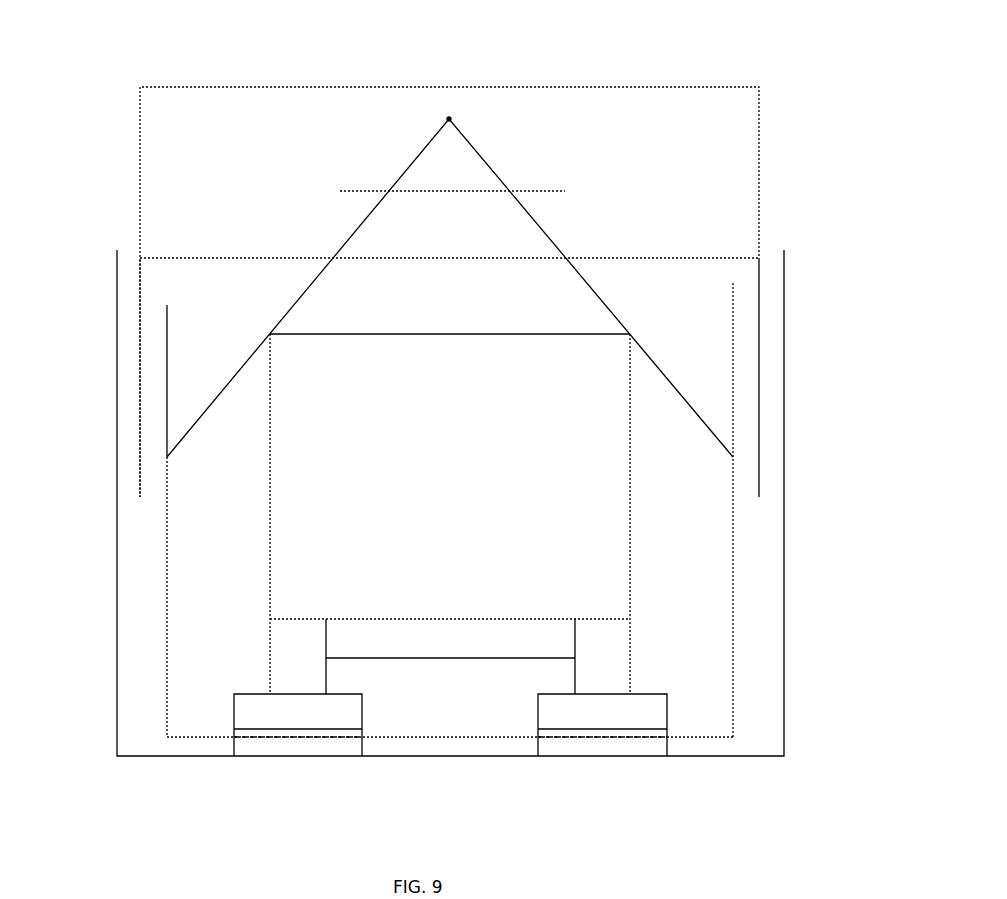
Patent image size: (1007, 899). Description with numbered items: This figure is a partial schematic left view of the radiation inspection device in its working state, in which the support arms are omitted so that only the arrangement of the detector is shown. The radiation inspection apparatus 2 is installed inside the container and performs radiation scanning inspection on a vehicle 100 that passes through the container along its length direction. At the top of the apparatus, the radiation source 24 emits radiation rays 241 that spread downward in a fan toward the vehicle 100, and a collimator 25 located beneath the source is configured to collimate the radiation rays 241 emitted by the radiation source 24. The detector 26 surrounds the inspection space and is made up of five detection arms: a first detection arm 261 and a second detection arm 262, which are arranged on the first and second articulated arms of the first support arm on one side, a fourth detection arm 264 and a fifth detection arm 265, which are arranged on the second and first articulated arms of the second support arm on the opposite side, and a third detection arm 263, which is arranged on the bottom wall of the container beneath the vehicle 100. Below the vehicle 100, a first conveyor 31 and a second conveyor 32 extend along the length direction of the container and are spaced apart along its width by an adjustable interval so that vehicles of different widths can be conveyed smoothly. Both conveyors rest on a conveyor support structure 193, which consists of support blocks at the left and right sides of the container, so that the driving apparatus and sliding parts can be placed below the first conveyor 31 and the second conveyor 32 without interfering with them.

The radiation inspection apparatus 2 is at (290, 121).
The radiation source 24 is at (449, 119).
The collimator 25 is at (541, 190).
The radiation rays 241 is at (547, 233).
The detector 26 is at (113, 128).
The first detection arm 261 is at (759, 393).
The second detection arm 262 is at (733, 578).
The third detection arm 263 is at (460, 740).
The fourth detection arm 264 is at (167, 570).
The fifth detection arm 265 is at (140, 395).
The vehicle 100 is at (320, 578).
The first conveyor 31 is at (620, 703).
The second conveyor 32 is at (303, 703).
The conveyor support structure 193 is at (262, 747).